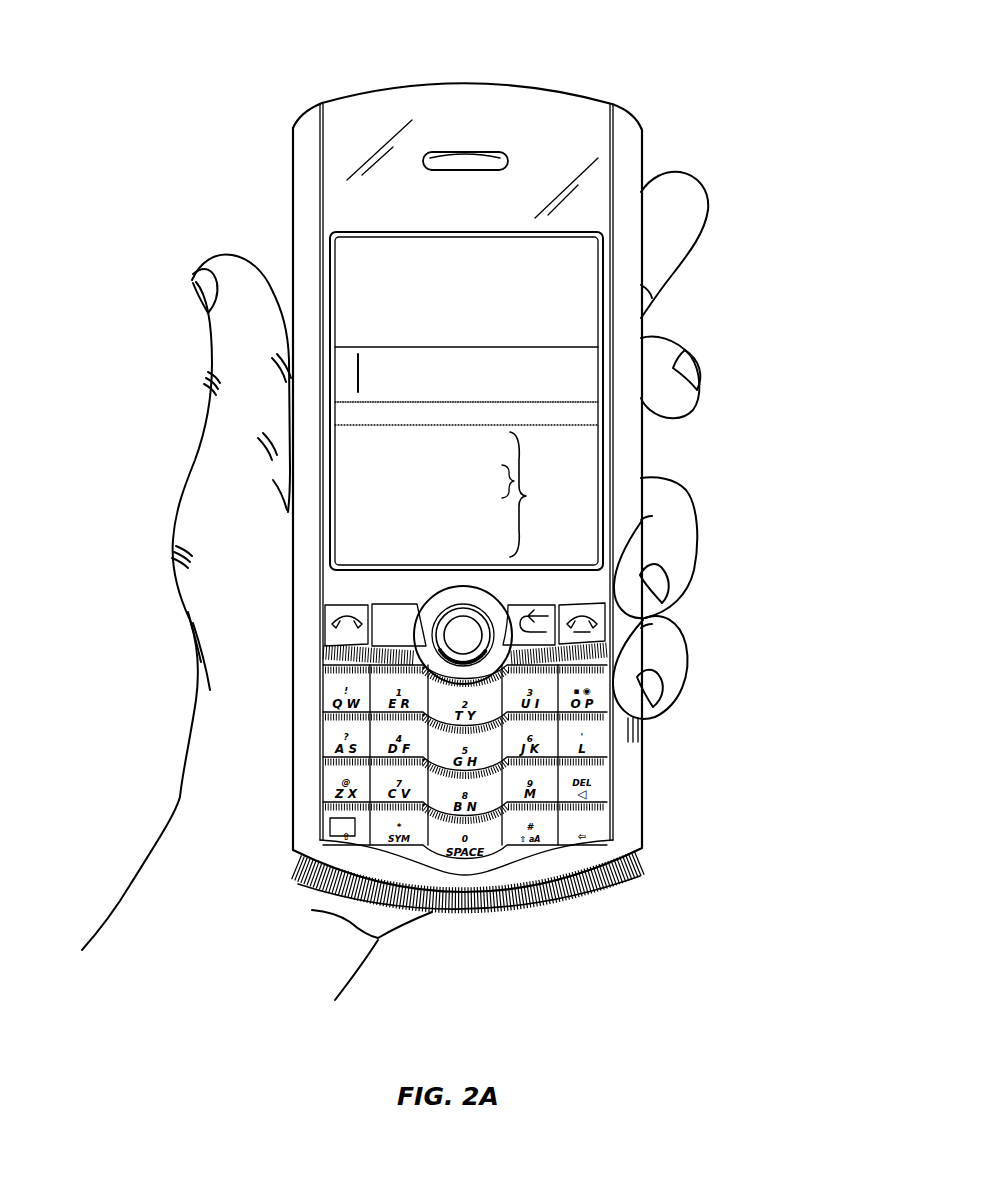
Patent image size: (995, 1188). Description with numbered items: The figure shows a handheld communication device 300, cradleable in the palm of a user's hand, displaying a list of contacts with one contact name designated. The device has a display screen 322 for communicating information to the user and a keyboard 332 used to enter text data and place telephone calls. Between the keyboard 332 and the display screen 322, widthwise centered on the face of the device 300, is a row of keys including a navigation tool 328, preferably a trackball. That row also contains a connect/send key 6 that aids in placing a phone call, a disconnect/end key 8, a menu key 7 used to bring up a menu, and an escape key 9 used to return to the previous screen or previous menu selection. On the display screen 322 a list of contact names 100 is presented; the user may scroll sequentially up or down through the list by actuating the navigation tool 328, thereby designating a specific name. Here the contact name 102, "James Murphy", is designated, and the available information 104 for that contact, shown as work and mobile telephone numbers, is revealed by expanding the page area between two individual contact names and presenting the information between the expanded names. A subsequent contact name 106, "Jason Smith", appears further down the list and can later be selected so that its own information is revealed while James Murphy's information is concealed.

The handheld device 300 is at (597, 31).
The display screen 322 is at (436, 368).
The contact name 102 is at (331, 450).
The subsequent contact name 106 is at (331, 546).
The available information 104 is at (514, 481).
The list of contact names 100 is at (526, 496).
The navigation tool 328 is at (492, 593).
The escape key 9 is at (540, 618).
The disconnect/end key 8 is at (602, 623).
The menu key 7 is at (390, 615).
The connect/send key 6 is at (347, 617).
The keyboard 332 is at (482, 882).